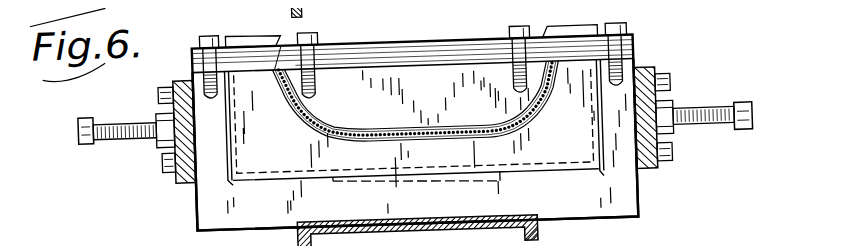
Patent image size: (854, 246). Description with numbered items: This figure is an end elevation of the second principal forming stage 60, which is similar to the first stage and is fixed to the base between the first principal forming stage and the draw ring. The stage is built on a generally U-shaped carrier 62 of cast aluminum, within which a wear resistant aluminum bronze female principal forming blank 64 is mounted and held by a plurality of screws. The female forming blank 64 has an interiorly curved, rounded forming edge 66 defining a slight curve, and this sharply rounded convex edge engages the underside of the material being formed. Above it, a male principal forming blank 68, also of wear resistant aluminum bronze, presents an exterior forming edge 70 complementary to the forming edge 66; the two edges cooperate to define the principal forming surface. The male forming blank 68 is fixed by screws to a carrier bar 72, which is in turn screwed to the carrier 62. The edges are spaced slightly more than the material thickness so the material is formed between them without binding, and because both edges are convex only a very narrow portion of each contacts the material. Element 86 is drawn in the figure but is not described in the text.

The second principal forming stage 60 is at (646, 74).
The carrier 62 is at (626, 206).
The female principal forming blank 64 is at (565, 164).
The forming edge 66 is at (544, 123).
The male principal forming blank 68 is at (417, 87).
The exterior forming edge 70 is at (331, 144).
The carrier bar 72 is at (493, 56).
The support flange 86 is at (419, 230).